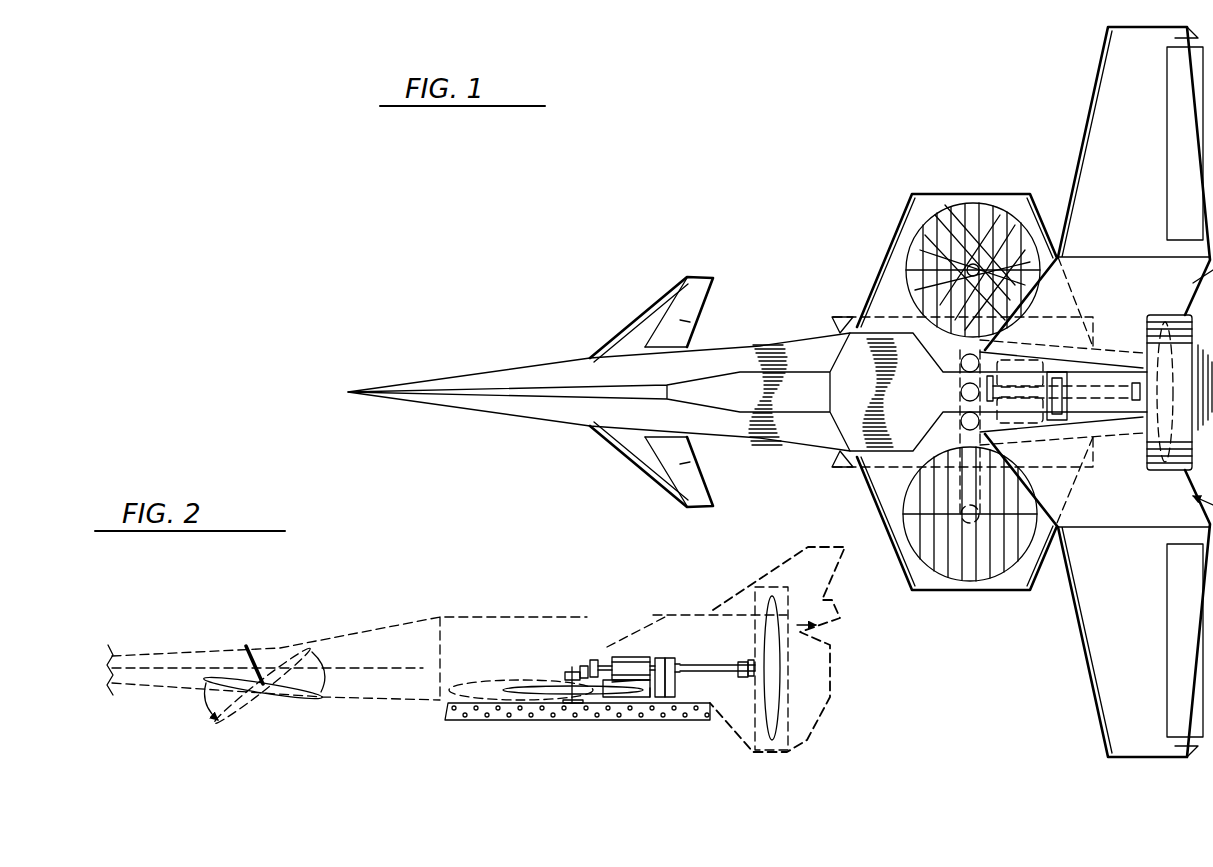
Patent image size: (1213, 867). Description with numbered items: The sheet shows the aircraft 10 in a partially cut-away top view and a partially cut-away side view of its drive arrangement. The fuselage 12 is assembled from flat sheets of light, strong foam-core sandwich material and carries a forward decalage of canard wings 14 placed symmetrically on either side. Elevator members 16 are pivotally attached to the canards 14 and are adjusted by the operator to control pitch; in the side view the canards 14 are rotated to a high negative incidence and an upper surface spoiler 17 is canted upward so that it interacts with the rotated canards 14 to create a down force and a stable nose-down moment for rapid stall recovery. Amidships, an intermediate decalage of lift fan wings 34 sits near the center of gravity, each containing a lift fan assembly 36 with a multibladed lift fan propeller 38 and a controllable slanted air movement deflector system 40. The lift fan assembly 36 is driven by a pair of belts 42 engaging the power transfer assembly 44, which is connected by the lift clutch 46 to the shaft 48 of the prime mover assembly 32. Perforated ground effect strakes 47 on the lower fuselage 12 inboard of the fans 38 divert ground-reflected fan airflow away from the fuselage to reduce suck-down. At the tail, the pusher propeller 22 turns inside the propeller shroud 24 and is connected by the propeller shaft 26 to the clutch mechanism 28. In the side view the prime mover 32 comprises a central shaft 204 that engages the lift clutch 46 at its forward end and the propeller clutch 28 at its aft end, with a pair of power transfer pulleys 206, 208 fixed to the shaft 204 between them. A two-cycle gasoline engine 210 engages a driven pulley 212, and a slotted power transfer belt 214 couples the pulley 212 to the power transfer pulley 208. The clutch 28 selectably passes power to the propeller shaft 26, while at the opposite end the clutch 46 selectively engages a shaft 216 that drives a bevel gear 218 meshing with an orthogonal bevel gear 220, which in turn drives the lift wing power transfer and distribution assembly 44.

In FIG. 1, the aircraft 10 is at (763, 240).
In FIG. 1, the fuselage 12 is at (779, 334).
In FIG. 2, the fuselage 12 is at (276, 638).
In FIG. 1, the canard wings 14 is at (655, 297).
In FIG. 2, the canard wings 14 is at (282, 706).
In FIG. 1, the elevator members 16 is at (705, 318).
In FIG. 2, the upper surface spoiler 17 is at (248, 650).
In FIG. 2, the pusher propeller 22 is at (822, 648).
In FIG. 2, the propeller shroud 24 is at (790, 598).
In FIG. 1, the propeller shaft 26 is at (1152, 346).
In FIG. 2, the propeller shaft 26 is at (757, 660).
In FIG. 1, the clutch mechanism 28 is at (1136, 402).
In FIG. 2, the clutch mechanism 28 is at (740, 662).
In FIG. 1, the prime mover assembly 32 is at (1012, 410).
In FIG. 2, the prime mover assembly 32 is at (626, 657).
In FIG. 1, the lift fan wings 34 is at (922, 192).
In FIG. 1, the lift fan assembly 36 is at (976, 262).
In FIG. 1, the lift fan propeller 38 is at (930, 242).
In FIG. 1, the air movement deflector system 40 is at (925, 287).
In FIG. 1, the belts 42 is at (998, 293).
In FIG. 1, the power transfer assembly 44 is at (958, 393).
In FIG. 2, the power transfer assembly 44 is at (560, 682).
In FIG. 1, the lift clutch 46 is at (990, 378).
In FIG. 2, the lift clutch 46 is at (590, 660).
In FIG. 1, the perforated ground effect strake 47 is at (840, 468).
In FIG. 2, the perforated ground effect strake 47 is at (489, 720).
In FIG. 1, the shaft 48 is at (1020, 372).
In FIG. 2, the central shaft 204 is at (595, 660).
In FIG. 2, the power transfer pulley 206 is at (660, 658).
In FIG. 2, the power transfer pulley 208 is at (670, 658).
In FIG. 2, the engine 210 is at (630, 698).
In FIG. 2, the driven pulley 212 is at (684, 720).
In FIG. 2, the slotted power transfer belt 214 is at (677, 680).
In FIG. 2, the shaft 216 is at (580, 662).
In FIG. 2, the bevel gear 218 is at (577, 670).
In FIG. 2, the orthogonal bevel gear 220 is at (570, 680).